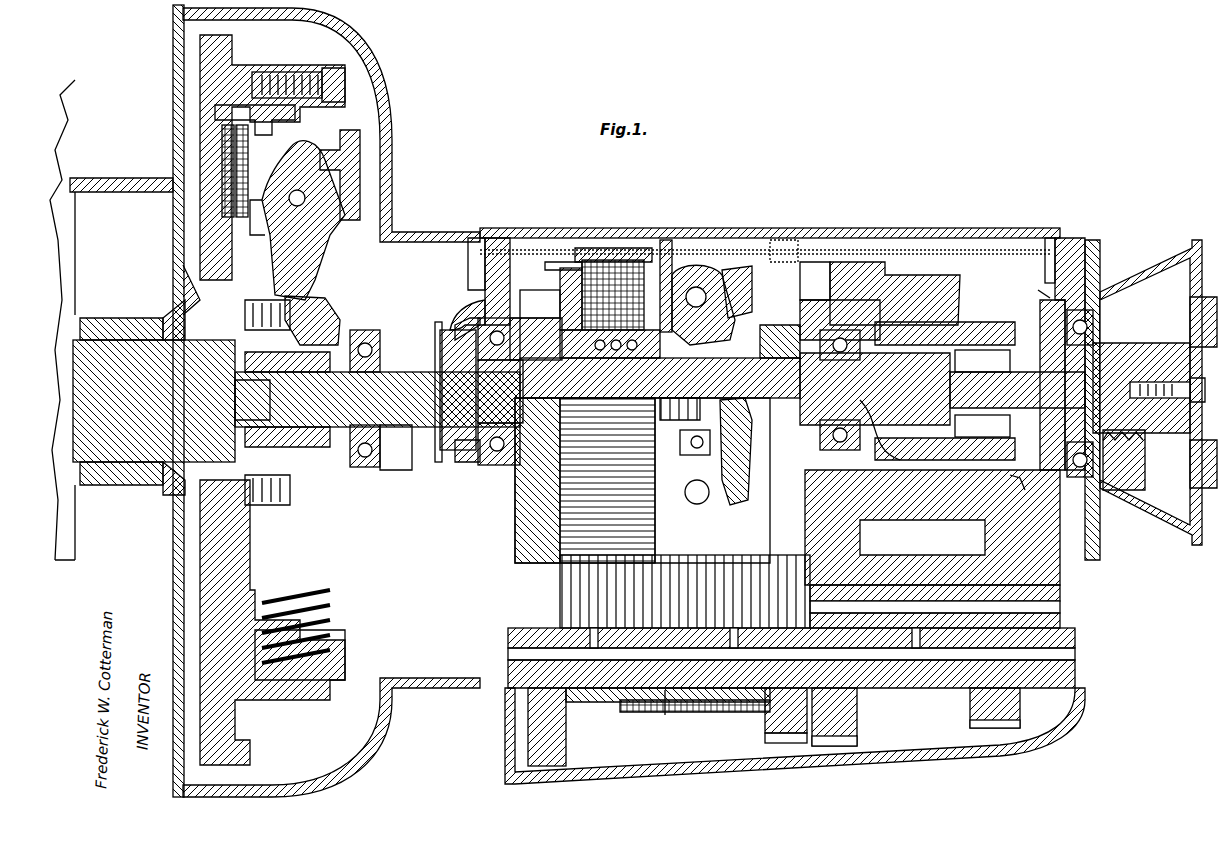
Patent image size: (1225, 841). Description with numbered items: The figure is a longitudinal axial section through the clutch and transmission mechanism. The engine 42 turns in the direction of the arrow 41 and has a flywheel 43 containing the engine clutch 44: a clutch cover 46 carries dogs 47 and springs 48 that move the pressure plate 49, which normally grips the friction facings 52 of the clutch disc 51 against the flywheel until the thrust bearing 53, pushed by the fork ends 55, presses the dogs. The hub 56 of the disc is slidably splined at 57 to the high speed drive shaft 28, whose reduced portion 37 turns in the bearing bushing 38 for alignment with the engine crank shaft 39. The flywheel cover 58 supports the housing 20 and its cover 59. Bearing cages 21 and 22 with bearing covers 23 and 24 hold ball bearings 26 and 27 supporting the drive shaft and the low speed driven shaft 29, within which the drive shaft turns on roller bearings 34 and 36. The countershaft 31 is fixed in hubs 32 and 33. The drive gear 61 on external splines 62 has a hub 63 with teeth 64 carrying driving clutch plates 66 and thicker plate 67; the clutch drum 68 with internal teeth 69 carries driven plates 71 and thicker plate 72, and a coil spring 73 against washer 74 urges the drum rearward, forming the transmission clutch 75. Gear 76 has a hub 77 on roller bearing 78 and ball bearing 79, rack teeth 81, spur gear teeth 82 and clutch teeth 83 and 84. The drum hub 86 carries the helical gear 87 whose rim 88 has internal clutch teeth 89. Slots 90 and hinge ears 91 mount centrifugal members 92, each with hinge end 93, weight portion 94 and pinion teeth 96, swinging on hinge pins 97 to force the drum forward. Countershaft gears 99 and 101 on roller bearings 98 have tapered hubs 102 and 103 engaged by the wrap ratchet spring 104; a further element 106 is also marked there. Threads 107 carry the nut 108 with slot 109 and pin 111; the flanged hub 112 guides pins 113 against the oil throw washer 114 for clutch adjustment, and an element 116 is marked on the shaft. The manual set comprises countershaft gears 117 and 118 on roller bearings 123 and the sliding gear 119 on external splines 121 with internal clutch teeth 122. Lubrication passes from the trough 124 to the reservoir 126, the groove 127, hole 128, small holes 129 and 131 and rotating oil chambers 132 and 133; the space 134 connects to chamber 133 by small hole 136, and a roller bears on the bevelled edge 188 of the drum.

The housing 20 is at (505, 744).
The ball bearing cage 21 is at (516, 315).
The ball bearing cage 22 is at (1080, 238).
The bearing cover 23 is at (475, 276).
The bearing cover 24 is at (1098, 252).
The ball bearing 26 is at (462, 306).
The ball bearing 27 is at (1100, 320).
The high speed drive shaft 28 is at (404, 350).
The low speed driven shaft 29 is at (1008, 322).
The countershaft 31 is at (1080, 637).
The hub 32 is at (492, 700).
The hub 33 is at (1078, 670).
The roller bearing 34 is at (905, 400).
The roller bearing 36 is at (1050, 380).
The reduced diameter portion 37 is at (185, 403).
The bearing bushing 38 is at (212, 437).
The engine crank shaft 39 is at (80, 318).
The arrow 41 is at (118, 358).
The engine 42 is at (60, 186).
The flywheel 43 is at (245, 75).
The engine clutch 44 is at (312, 545).
The clutch cover 46 is at (348, 222).
The dogs 47 is at (316, 262).
The springs 48 is at (275, 660).
The pressure plate 49 is at (262, 148).
The clutch disc 51 is at (312, 315).
The friction facings 52 is at (236, 130).
The thrust bearing 53 is at (352, 470).
The fork ends 55 is at (395, 470).
The hub 56 is at (268, 449).
The splines 57 is at (272, 340).
The flywheel cover 58 is at (322, 52).
The housing cover 59 is at (538, 228).
The drive gear 61 is at (540, 302).
The external splines 62 is at (660, 378).
The hub 63 is at (582, 378).
The teeth 64 is at (616, 339).
The driving clutch plates 66 is at (606, 344).
The driving clutch plate 67 is at (565, 280).
The clutch drum 68 is at (610, 262).
The internal teeth 69 is at (560, 264).
The driven clutch plates 71 is at (640, 255).
The driven plate 72 is at (662, 240).
The coil spring 73 is at (609, 380).
The washer 74 is at (645, 376).
The transmission clutch 75 is at (632, 466).
The gear 76 is at (838, 300).
The hub 77 is at (728, 380).
The roller bearing 78 is at (701, 375).
The ball bearing 79 is at (852, 375).
The rack teeth 81 is at (669, 382).
The spur gear teeth 82 is at (838, 262).
The clutch teeth 83 is at (812, 300).
The clutch teeth 84 is at (860, 300).
The hub 86 is at (755, 378).
The helical gear 87 is at (790, 265).
The rim 88 is at (779, 247).
The internal clutch teeth 89 is at (815, 265).
The slots 90 is at (672, 258).
The hinge ears 91 is at (660, 515).
The centrifugal members 92 is at (712, 252).
The hinge end 93 is at (645, 400).
The weight portion 94 is at (738, 268).
The pinion teeth 96 is at (768, 341).
The hinge pins 97 is at (685, 452).
The roller bearings 98 is at (640, 640).
The countershaft gear 99 is at (566, 762).
The countershaft gear 101 is at (780, 732).
The tapered hub 102 is at (667, 701).
The tapered hub 103 is at (766, 706).
The wrap ratchet spring 104 is at (672, 698).
The brush spring 106 is at (662, 712).
The threads 107 is at (377, 399).
The nut 108 is at (480, 470).
The slot 109 is at (440, 445).
The pin 111 is at (432, 505).
The flanged hub 112 is at (522, 333).
The pins 113 is at (500, 391).
The oil throw washer 114 is at (470, 328).
The shaft portion 116 is at (892, 398).
The first countershaft gear 117 is at (857, 742).
The second countershaft gear 118 is at (990, 718).
The sliding high and low gear 119 is at (935, 530).
The external splines 121 is at (1008, 483).
The internal clutch teeth 122 is at (888, 490).
The roller bearings 123 is at (935, 606).
The trough 124 is at (885, 238).
The reservoir 126 is at (1052, 238).
The groove 127 is at (1035, 485).
The hole 128 is at (1038, 290).
The small hole 129 is at (1008, 428).
The small hole 131 is at (880, 435).
The rotating oil chamber 132 is at (968, 358).
The rotating oil chamber 133 is at (840, 388).
The space 134 is at (782, 380).
The small hole 136 is at (829, 388).
The bevelled edge 188 is at (578, 262).